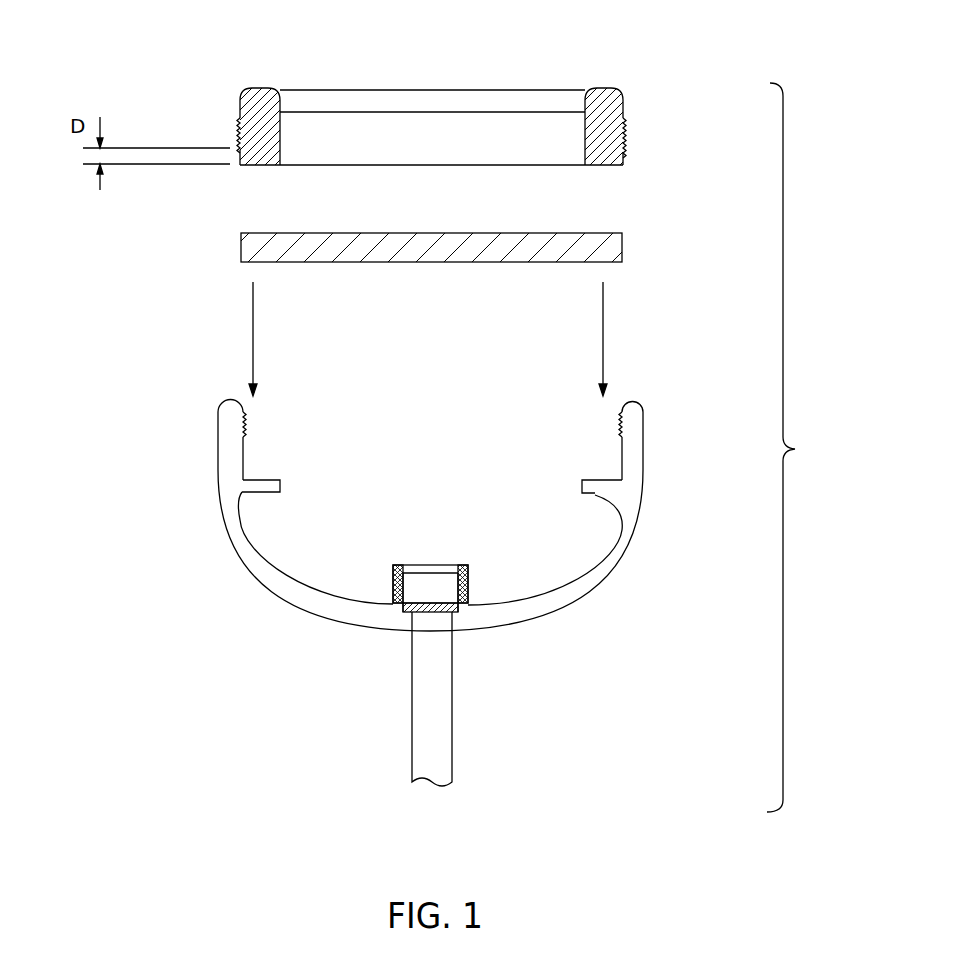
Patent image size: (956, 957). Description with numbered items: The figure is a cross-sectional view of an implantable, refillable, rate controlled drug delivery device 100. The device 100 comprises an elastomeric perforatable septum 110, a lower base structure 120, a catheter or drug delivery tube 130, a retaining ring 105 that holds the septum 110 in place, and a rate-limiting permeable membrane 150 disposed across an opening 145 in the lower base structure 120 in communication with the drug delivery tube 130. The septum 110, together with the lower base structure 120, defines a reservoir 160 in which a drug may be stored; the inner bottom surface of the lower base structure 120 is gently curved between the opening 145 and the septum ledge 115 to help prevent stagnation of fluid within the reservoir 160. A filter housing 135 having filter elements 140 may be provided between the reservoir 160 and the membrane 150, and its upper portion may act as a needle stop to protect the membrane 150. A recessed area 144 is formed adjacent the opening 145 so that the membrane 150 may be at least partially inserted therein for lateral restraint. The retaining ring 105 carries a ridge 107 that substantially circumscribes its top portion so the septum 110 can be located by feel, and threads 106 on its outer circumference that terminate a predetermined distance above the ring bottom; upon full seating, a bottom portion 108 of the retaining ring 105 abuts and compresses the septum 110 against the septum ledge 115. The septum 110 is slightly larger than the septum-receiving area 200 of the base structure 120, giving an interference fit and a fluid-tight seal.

The drug delivery device 100 is at (801, 447).
The retaining ring 105 is at (258, 115).
The threads 106 is at (625, 125).
The ridge 107 is at (436, 97).
The bottom portion of the retaining ring 108 is at (630, 158).
The elastomeric perforatable septum 110 is at (598, 243).
The septum ledge 115 is at (250, 490).
The lower base structure 120 is at (476, 515).
The drug delivery tube 130 is at (437, 717).
The filter housing 135 is at (425, 565).
The filter elements 140 is at (393, 580).
The recessed area 144 is at (462, 610).
The opening 145 is at (392, 611).
The rate-limiting permeable membrane 150 is at (430, 624).
The reservoir 160 is at (426, 605).
The septum-receiving area 200 is at (243, 468).